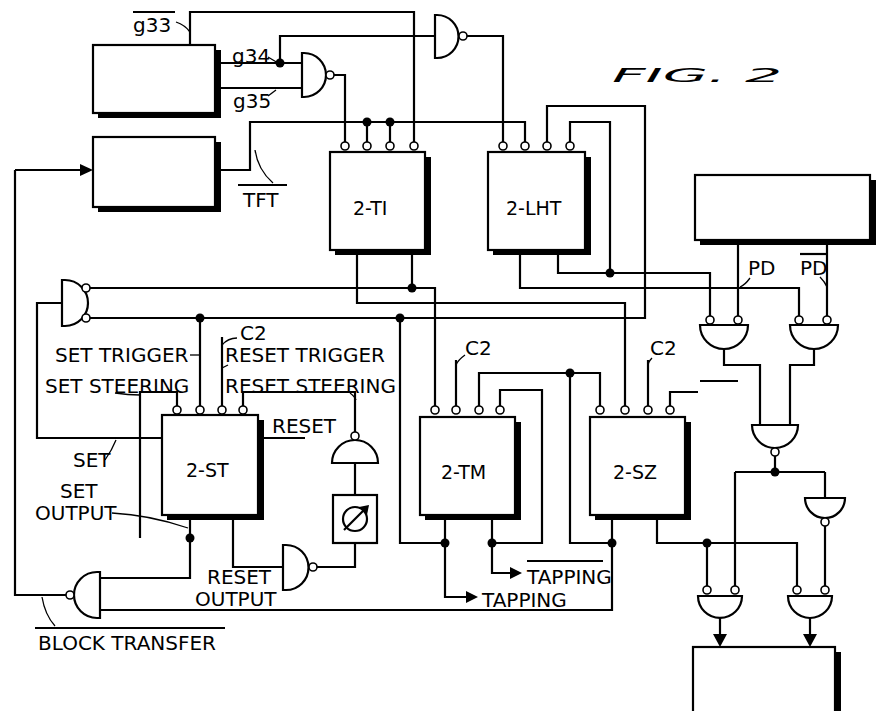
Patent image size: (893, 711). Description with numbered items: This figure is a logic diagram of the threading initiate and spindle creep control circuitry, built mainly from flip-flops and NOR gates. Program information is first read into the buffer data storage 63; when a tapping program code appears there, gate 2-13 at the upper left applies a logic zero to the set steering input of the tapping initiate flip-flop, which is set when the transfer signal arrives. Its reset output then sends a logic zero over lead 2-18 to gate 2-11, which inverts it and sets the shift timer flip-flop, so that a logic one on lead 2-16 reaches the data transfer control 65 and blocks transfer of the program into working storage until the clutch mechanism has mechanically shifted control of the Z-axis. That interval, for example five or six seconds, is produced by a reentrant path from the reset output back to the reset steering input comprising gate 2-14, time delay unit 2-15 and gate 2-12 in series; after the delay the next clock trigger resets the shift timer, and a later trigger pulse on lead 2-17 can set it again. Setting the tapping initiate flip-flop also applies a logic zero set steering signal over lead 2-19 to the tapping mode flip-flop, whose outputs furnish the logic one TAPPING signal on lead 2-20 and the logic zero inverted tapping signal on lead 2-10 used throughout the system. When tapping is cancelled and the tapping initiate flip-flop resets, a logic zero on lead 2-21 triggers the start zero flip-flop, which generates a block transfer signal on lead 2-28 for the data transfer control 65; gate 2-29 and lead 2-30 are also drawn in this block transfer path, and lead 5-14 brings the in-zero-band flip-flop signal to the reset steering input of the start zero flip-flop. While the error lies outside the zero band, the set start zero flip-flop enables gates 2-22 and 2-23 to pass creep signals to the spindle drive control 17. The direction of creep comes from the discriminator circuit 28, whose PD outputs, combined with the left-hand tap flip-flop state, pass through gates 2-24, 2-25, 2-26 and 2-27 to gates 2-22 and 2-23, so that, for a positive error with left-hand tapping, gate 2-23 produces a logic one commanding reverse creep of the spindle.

The buffer data storage 63 is at (92, 70).
The data transfer control 65 is at (93, 150).
The discriminator circuit 28 is at (726, 175).
The spindle drive control 17 is at (693, 680).
The lead 2-10 is at (490, 548).
The gate 2-11 is at (66, 283).
The gate 2-12 is at (332, 457).
The gate 2-13 is at (318, 55).
The gate 2-14 is at (305, 580).
The time delay unit 2-15 is at (333, 525).
The lead 2-16 is at (187, 568).
The lead 2-17 is at (198, 337).
The lead 2-18 is at (223, 288).
The lead 2-19 is at (435, 332).
The lead 2-20 is at (445, 560).
The lead 2-21 is at (510, 303).
The gate 2-22 is at (700, 605).
The gate 2-23 is at (792, 606).
The gate 2-24 is at (702, 330).
The gate 2-25 is at (834, 330).
The gate 2-26 is at (790, 436).
The gate 2-27 is at (805, 508).
The lead 2-28 is at (452, 17).
The gate 2-29 is at (82, 578).
The line 2-30 is at (418, 612).
The IZB line 5-14 is at (683, 392).